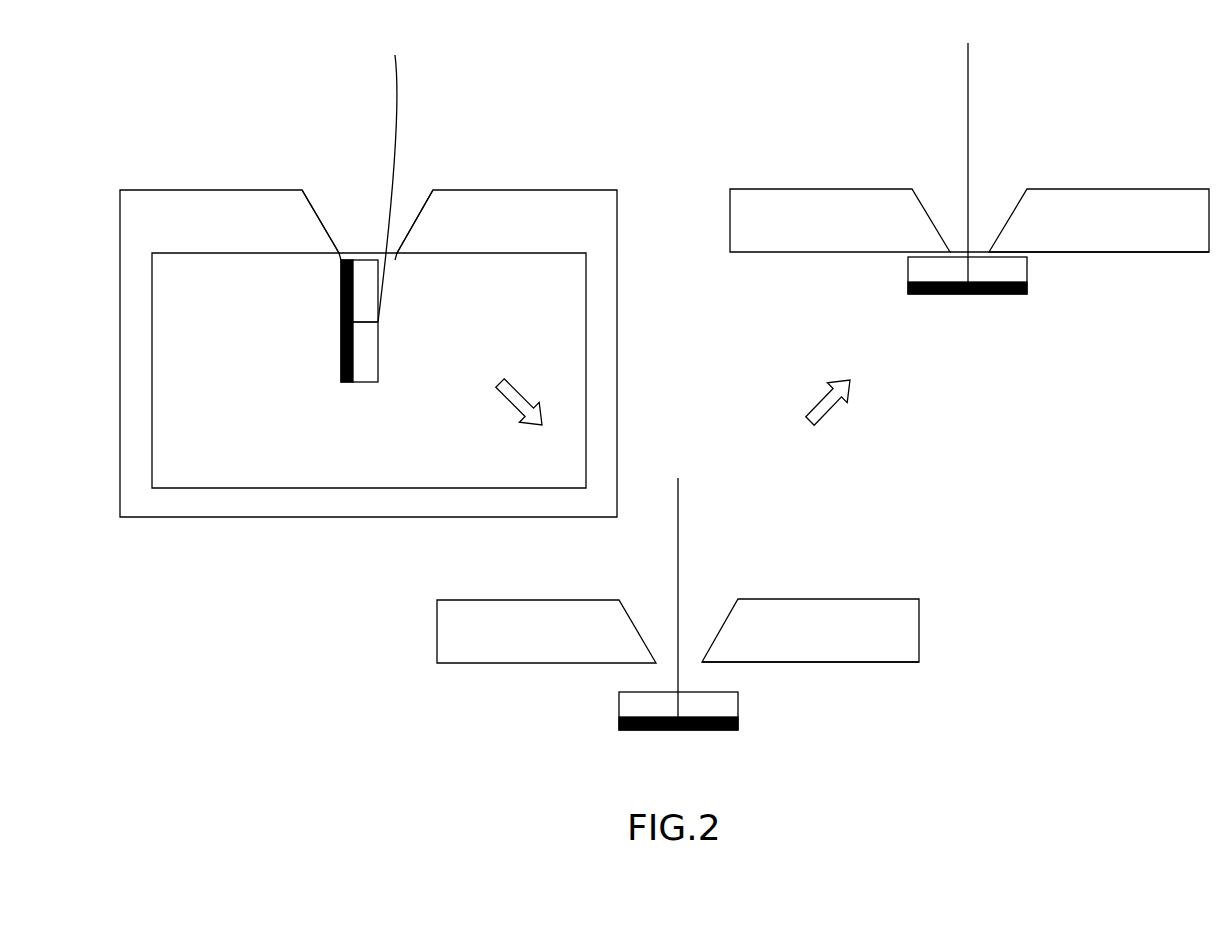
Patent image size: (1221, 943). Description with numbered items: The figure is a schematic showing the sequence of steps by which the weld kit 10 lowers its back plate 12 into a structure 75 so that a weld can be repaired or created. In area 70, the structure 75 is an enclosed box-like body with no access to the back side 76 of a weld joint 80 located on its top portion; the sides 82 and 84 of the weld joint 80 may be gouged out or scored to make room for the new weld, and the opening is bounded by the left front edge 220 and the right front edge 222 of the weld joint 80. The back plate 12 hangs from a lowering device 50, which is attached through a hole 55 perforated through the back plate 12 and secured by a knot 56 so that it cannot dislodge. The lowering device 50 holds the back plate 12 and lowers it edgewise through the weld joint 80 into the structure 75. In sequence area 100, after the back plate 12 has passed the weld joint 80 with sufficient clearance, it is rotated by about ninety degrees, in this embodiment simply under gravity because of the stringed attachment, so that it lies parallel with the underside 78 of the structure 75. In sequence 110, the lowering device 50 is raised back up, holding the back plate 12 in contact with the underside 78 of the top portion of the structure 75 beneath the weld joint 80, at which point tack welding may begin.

The weld kit 10 is at (397, 260).
The back plate 12 is at (341, 385).
The lowering device 50 is at (400, 97).
The hole 55 is at (357, 321).
The knot 56 is at (341, 322).
The area 70 is at (522, 66).
The structure 75 is at (617, 218).
The back side 76 is at (367, 246).
The underside 78 is at (1100, 252).
The weld joint 80 is at (1027, 178).
The side of the weld joint 82 is at (410, 226).
The side of the weld joint 84 is at (320, 222).
The sequence area 100 is at (796, 518).
The sequence 110 is at (1054, 112).
The left front edge 220 is at (397, 258).
The right front edge 222 is at (337, 258).